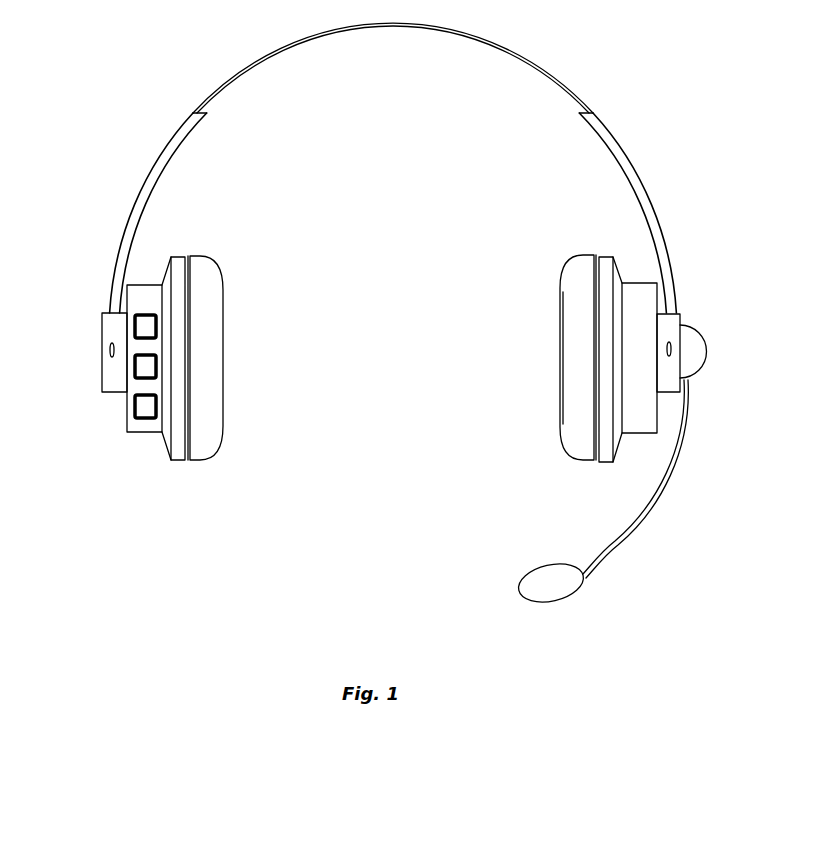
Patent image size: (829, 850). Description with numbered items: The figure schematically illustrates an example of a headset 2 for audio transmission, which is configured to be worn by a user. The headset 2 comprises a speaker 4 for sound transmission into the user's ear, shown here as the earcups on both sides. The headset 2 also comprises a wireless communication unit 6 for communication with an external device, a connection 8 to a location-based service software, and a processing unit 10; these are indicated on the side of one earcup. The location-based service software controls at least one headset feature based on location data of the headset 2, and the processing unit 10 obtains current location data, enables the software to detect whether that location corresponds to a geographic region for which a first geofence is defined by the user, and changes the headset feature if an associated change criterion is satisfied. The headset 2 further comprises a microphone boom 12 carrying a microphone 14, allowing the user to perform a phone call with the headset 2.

The headset 2 is at (178, 582).
The speaker 4 is at (205, 304).
The wireless communication unit 6 is at (133, 316).
The connection 8 is at (133, 360).
The processing unit 10 is at (147, 407).
The microphone boom 12 is at (684, 420).
The microphone 14 is at (542, 580).